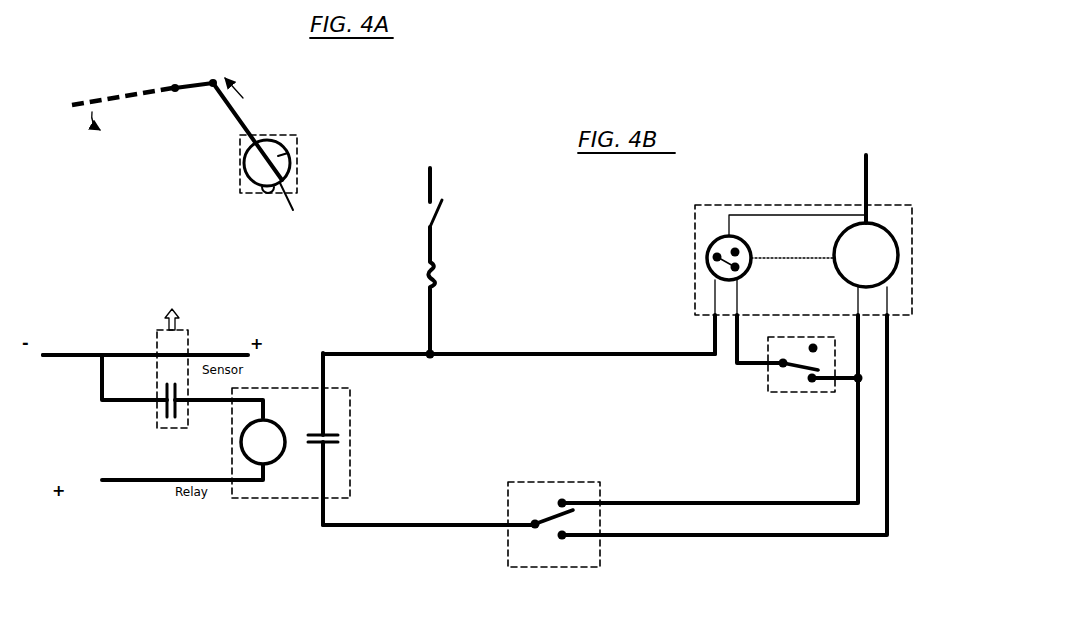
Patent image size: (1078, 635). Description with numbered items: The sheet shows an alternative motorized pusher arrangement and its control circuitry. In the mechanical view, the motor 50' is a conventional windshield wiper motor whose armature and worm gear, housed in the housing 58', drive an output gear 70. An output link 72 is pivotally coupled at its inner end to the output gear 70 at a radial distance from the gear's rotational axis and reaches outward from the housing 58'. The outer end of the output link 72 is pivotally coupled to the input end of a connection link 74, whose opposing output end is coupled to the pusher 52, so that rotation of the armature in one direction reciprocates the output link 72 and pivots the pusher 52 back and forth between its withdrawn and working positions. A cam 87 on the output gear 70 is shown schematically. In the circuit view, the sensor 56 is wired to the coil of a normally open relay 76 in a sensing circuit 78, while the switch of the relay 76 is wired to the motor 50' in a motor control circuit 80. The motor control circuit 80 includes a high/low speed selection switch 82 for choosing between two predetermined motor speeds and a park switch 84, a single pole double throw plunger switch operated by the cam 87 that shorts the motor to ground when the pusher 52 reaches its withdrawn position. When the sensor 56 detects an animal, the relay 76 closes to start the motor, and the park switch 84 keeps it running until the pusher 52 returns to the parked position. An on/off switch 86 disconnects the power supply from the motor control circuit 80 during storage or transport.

In FIG. 4A, the pusher 52 is at (137, 90).
In FIG. 4A, the connection link 74 is at (187, 82).
In FIG. 4A, the output link 72 is at (237, 110).
In FIG. 4A, the output gear 70 is at (286, 137).
In FIG. 4A, the motor 50' is at (218, 174).
In FIG. 4B, the motor 50' is at (818, 225).
In FIG. 4A, the housing 58' is at (259, 214).
In FIG. 4A, the cam 87 is at (301, 203).
In FIG. 4B, the sensor 56 is at (180, 343).
In FIG. 4B, the sensing circuit 78 is at (143, 498).
In FIG. 4B, the relay 76 is at (280, 498).
In FIG. 4B, the on/off switch 86 is at (445, 215).
In FIG. 4B, the high/low speed selection switch 82 is at (547, 478).
In FIG. 4B, the park switch 84 is at (808, 393).
In FIG. 4B, the motor control circuit 80 is at (792, 550).